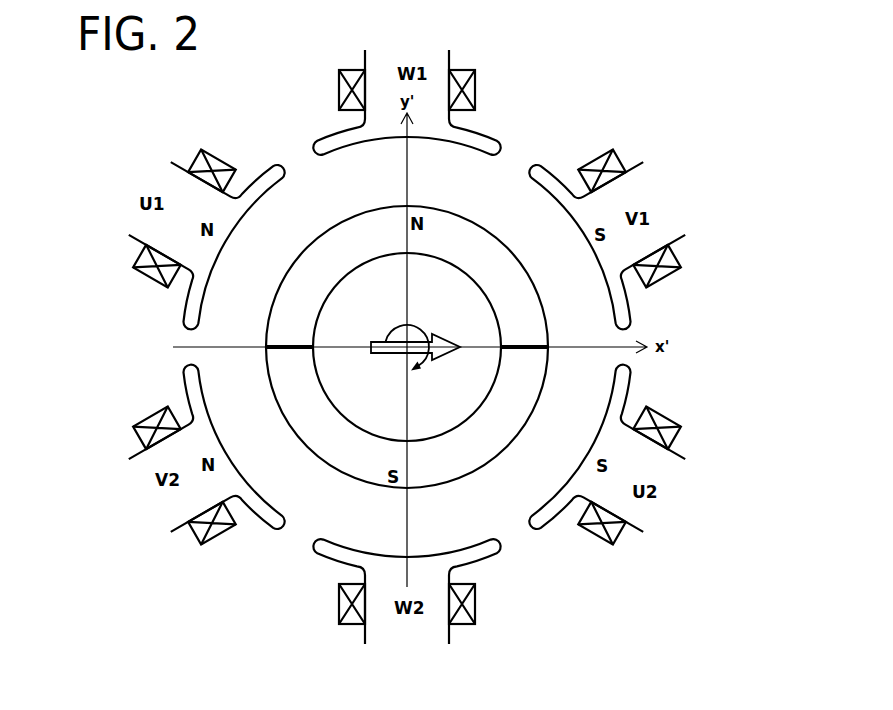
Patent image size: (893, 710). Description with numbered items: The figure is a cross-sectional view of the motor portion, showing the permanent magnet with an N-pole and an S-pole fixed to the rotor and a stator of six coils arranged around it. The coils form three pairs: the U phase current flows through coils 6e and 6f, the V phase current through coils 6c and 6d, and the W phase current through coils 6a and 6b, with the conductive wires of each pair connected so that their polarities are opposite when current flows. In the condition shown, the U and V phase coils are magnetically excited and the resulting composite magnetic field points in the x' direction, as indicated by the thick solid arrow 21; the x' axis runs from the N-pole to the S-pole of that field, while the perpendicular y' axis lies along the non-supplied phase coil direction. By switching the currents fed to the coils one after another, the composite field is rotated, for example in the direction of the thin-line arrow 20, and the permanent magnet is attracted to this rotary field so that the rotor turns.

The coil 6a is at (433, 54).
The coil 6b is at (377, 626).
The coil 6c is at (645, 186).
The coil 6d is at (144, 474).
The coil 6e is at (676, 476).
The coil 6f is at (179, 172).
The arrow 20 is at (423, 328).
The arrow 21 is at (390, 356).